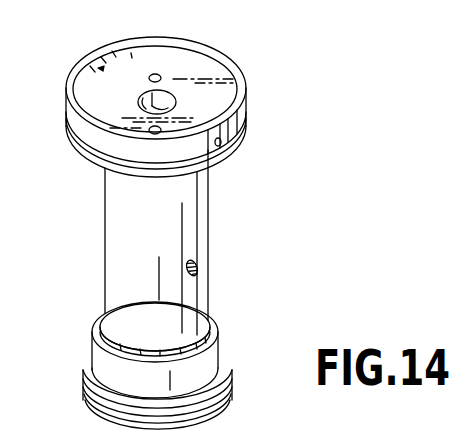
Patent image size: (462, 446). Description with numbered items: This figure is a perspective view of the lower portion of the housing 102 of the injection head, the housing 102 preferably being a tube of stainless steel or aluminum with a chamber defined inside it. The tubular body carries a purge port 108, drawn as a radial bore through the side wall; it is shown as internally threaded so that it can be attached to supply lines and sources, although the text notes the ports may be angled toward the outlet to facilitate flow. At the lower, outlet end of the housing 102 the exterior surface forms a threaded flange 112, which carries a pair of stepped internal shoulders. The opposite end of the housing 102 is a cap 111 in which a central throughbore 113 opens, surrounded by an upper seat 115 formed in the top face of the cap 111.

The housing 102 is at (243, 178).
The purge port 108 is at (200, 268).
The cap 111 is at (244, 117).
The threaded flange 112 is at (232, 383).
The throughbore 113 is at (147, 99).
The upper seat 115 is at (120, 123).